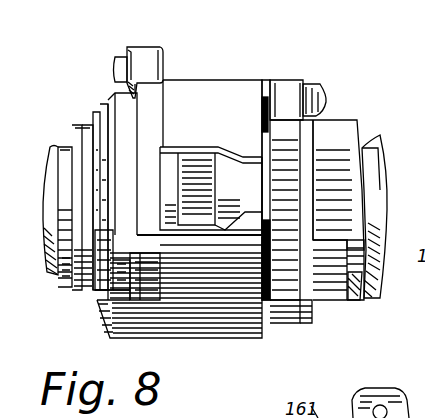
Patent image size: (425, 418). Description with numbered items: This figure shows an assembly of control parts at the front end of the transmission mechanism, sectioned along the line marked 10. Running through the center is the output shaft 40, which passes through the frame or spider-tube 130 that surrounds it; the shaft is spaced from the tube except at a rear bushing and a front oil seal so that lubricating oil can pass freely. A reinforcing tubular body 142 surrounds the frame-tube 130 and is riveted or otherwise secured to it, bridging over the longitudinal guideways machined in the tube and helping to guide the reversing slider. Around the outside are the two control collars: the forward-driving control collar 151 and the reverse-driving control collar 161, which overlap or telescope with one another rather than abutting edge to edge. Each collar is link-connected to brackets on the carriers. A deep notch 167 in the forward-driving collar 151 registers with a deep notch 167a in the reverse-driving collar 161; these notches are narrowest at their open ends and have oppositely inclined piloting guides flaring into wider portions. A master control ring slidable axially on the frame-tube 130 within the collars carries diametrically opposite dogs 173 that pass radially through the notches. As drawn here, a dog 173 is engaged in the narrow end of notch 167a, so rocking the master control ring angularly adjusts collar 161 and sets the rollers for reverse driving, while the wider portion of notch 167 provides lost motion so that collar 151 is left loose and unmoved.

The section line 10 is at (244, 26).
The output shaft 40 is at (50, 140).
The frame-tube 130 is at (57, 152).
The forward-driving control collar 151 is at (214, 79).
The deep notch 167 is at (160, 160).
The deep notch 167a is at (262, 180).
The dogs 173 is at (190, 185).
The reverse-driving control collar 161 is at (283, 148).
The reinforcing tubular body 142 is at (342, 142).